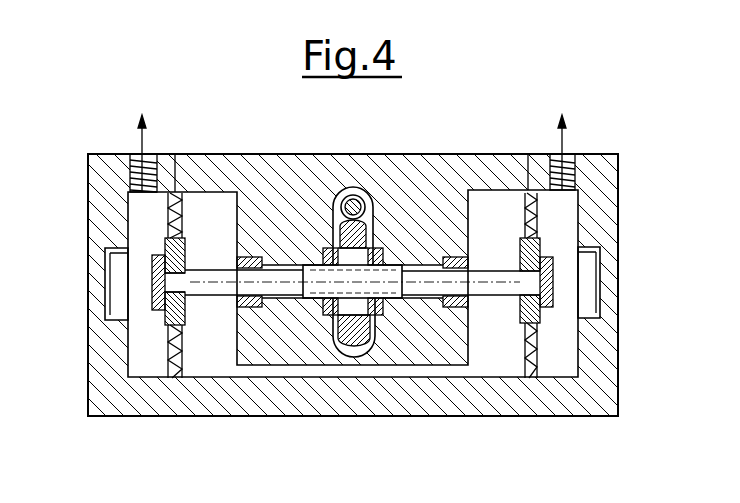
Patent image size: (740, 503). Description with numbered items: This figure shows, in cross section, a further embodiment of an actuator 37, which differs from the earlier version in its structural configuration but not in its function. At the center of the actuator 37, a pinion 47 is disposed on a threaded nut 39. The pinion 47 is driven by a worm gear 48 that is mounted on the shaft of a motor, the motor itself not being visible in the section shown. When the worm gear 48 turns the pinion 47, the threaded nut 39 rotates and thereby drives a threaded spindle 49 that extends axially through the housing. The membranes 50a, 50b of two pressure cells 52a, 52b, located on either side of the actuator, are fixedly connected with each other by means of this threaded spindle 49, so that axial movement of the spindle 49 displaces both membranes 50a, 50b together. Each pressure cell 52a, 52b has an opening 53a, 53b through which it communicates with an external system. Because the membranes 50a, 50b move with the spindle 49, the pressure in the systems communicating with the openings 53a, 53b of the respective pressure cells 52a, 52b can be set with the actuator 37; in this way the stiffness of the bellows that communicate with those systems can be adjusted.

The actuator 37 is at (480, 150).
The threaded nut 39 is at (315, 283).
The pinion 47 is at (362, 330).
The worm gear 48 is at (348, 197).
The threaded spindle 49 is at (212, 290).
The membrane 50a is at (172, 340).
The membrane 50b is at (538, 350).
The pressure cell 52a is at (134, 243).
The pressure cell 52b is at (567, 297).
The opening 53a is at (132, 155).
The opening 53b is at (566, 153).